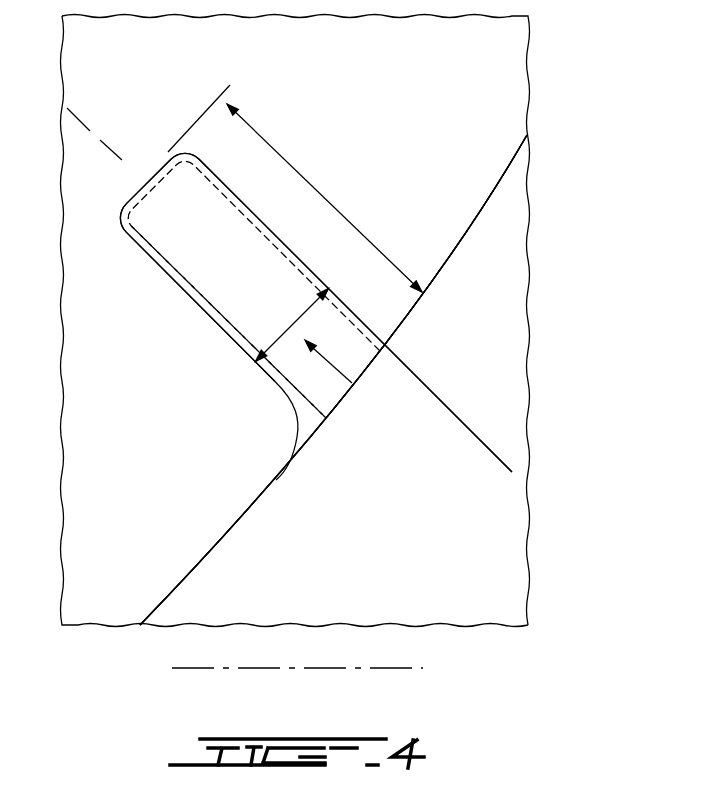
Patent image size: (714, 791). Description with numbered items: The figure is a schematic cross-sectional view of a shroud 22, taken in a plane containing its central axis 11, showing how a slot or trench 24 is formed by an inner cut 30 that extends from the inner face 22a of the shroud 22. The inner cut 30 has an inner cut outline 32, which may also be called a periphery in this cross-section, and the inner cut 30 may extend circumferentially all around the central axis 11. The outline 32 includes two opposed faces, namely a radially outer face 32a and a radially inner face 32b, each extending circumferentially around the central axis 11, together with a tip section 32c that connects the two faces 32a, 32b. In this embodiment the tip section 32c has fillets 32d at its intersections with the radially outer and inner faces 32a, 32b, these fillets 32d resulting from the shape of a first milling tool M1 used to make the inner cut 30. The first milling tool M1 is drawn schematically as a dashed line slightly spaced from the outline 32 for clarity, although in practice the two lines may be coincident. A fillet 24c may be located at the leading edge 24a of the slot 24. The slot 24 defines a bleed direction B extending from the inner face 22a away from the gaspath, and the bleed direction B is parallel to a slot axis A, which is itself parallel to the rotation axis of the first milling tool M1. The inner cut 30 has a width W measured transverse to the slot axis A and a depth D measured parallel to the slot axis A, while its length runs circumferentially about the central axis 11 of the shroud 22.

The shroud 22 is at (408, 101).
The inner face 22a is at (457, 243).
The inner cut outline 32 is at (362, 321).
The radially outer face 32a is at (302, 262).
The radially inner face 32b is at (210, 316).
The tip section 32c is at (139, 151).
The fillets 32d is at (180, 180).
The first milling tool M1 is at (161, 266).
The slot 24 is at (332, 399).
The inner cut 30 is at (332, 399).
The leading edge 24a is at (283, 497).
The fillet 24c is at (265, 441).
The central axis 11 is at (396, 668).
The slot axis A is at (101, 140).
The bleed direction B is at (333, 370).
The depth D is at (291, 163).
The width W is at (290, 330).